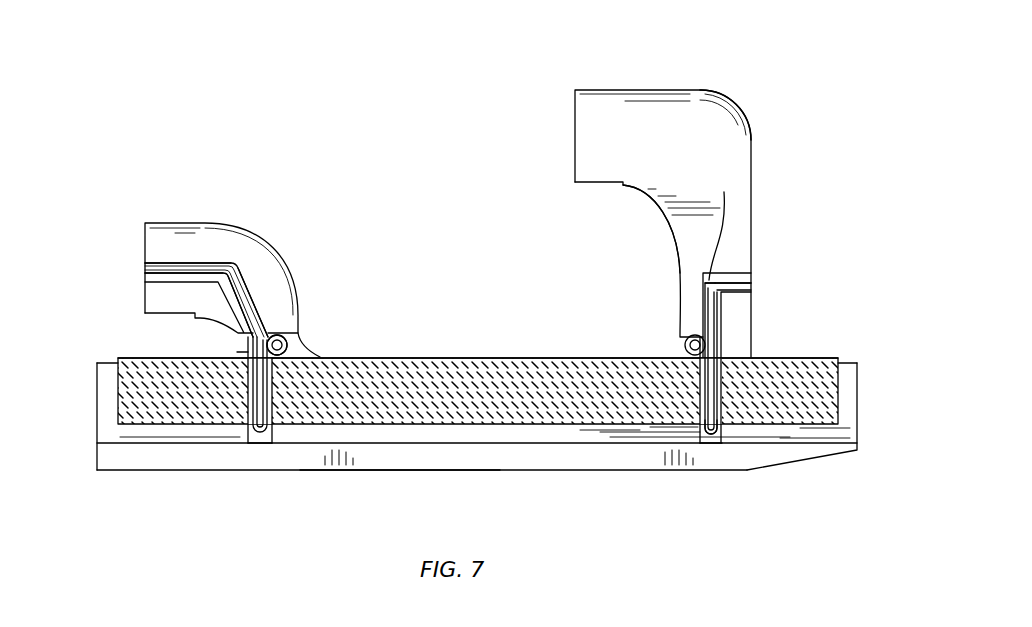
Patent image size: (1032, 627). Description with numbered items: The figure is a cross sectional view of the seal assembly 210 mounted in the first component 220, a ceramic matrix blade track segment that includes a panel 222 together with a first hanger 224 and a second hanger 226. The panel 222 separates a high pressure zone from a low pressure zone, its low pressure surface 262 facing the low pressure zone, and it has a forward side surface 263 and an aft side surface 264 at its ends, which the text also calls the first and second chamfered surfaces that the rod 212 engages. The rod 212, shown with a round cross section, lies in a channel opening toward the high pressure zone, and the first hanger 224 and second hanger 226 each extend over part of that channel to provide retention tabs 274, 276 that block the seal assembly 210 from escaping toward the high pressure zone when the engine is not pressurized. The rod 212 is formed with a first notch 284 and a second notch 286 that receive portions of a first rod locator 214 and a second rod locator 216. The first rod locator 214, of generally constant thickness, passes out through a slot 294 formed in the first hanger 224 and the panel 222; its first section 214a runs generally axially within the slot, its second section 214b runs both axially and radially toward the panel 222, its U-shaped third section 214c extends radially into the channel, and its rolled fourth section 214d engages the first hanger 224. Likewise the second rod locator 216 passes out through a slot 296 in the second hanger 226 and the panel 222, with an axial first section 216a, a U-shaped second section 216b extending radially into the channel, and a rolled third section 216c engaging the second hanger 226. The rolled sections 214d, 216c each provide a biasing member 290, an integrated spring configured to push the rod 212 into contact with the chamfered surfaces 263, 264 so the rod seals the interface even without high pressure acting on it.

The seal assembly 210 is at (775, 346).
The rod 212 is at (822, 374).
The first rod locator 214 is at (231, 351).
The first section 214a is at (180, 268).
The second section 214b is at (247, 307).
The third section 214c is at (250, 397).
The fourth section 214d is at (304, 320).
The second rod locator 216 is at (717, 382).
The first section 216a is at (742, 283).
The second section 216b is at (724, 430).
The third section 216c is at (703, 300).
The first component 220 is at (770, 101).
The panel 222 is at (207, 467).
The first hanger 224 is at (163, 214).
The second hanger 226 is at (714, 81).
The low pressure surface 262 is at (395, 471).
The forward side surface 263 is at (97, 457).
The aft side surface 264 is at (857, 450).
The retention tab 274 is at (214, 351).
The retention tab 276 is at (671, 280).
The first notch 284 is at (265, 437).
The second notch 286 is at (713, 438).
The biasing member 290 is at (292, 332).
The slot 294 is at (235, 335).
The slot 296 is at (724, 200).